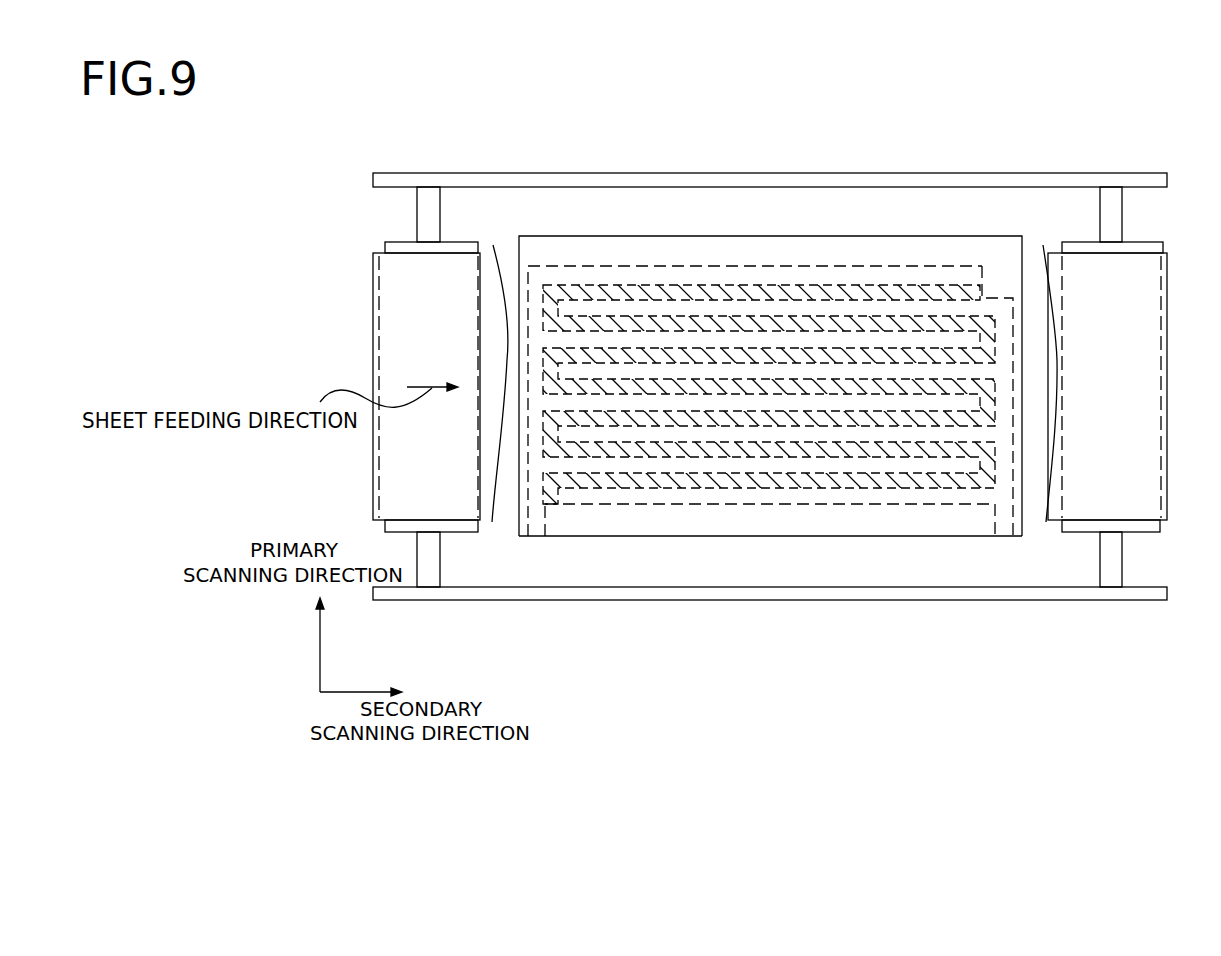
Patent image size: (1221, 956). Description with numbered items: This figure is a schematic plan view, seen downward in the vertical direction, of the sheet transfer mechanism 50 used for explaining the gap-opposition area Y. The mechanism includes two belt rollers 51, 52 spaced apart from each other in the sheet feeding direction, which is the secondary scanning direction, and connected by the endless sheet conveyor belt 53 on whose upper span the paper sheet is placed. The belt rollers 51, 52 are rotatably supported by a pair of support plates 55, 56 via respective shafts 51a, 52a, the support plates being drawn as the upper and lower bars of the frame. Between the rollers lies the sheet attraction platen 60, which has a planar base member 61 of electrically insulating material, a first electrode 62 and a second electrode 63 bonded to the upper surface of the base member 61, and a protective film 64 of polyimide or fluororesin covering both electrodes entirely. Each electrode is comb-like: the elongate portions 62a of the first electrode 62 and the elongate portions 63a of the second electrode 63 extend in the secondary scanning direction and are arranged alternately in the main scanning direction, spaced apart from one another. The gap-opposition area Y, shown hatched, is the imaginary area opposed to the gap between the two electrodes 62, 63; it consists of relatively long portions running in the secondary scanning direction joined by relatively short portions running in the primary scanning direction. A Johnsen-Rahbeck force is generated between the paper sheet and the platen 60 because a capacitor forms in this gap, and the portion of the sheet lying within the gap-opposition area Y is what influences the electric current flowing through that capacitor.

The sheet transfer mechanism 50 is at (792, 421).
The belt roller 51 is at (416, 363).
The shaft 51a is at (437, 578).
The belt roller 52 is at (1155, 248).
The shaft 52a is at (1117, 567).
The sheet conveyor belt 53 is at (390, 327).
The support plate 55 is at (676, 177).
The support plate 56 is at (762, 593).
The sheet attraction platen 60 is at (758, 382).
The base member 61 is at (935, 537).
The first electrode 62 is at (637, 509).
The elongate portion 62a is at (688, 497).
The second electrode 63 is at (843, 265).
The elongate portion 63a is at (798, 272).
The protective film 64 is at (848, 524).
The gap-opposition area Y is at (588, 290).